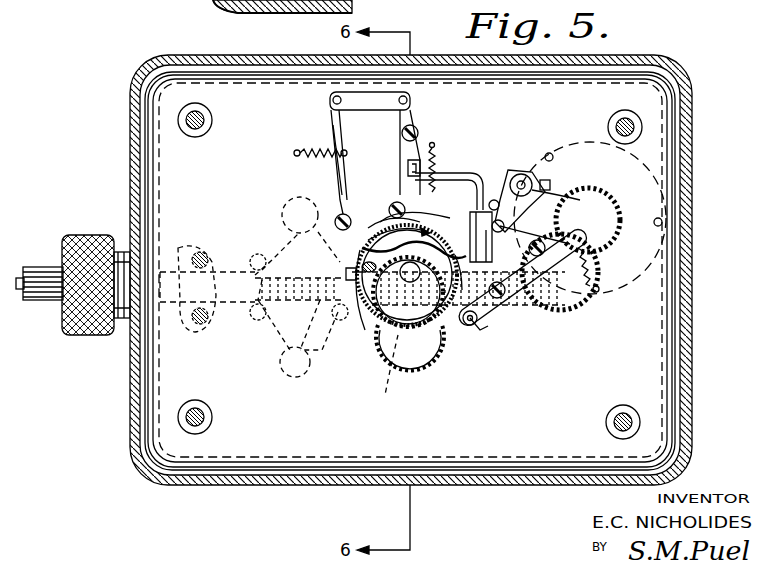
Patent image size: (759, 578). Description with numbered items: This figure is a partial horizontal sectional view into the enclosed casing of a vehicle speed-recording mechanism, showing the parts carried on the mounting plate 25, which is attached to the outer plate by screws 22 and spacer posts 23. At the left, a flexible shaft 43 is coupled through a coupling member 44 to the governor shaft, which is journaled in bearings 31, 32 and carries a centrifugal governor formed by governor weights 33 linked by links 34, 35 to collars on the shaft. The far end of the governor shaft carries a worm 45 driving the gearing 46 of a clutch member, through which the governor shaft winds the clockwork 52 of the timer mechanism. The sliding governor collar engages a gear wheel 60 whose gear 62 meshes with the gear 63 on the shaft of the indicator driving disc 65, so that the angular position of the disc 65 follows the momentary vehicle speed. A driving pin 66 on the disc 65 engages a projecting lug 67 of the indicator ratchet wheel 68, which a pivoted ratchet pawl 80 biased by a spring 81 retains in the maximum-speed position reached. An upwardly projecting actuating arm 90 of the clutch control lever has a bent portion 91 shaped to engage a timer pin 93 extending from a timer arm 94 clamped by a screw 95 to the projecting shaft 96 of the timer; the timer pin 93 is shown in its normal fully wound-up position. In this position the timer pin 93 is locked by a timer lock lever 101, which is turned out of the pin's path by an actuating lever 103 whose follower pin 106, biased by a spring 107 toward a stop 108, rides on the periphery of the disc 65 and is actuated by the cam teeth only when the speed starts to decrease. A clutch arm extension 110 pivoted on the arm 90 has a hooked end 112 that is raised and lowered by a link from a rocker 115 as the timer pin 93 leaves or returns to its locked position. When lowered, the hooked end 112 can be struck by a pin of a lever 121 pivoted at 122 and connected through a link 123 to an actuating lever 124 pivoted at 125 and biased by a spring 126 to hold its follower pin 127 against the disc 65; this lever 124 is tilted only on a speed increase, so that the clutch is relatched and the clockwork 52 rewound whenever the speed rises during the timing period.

The screws 22 is at (195, 132).
The spacer posts 23 is at (212, 120).
The mounting plate 25 is at (648, 358).
The bearing 31 is at (186, 316).
The bearing 32 is at (515, 306).
The governor weights 33 is at (288, 213).
The links 34 is at (258, 240).
The links 35 is at (327, 350).
The flexible shaft 43 is at (28, 268).
The coupling member 44 is at (72, 235).
The worm 45 is at (552, 326).
The gearing 46 is at (654, 264).
The clockwork 52 is at (694, 258).
The gear wheel 60 is at (440, 395).
The gear 62 is at (430, 395).
The gear 63 is at (430, 240).
The indicator driving disc 65 is at (364, 237).
The driving pin 66 is at (380, 330).
The projecting lug 67 is at (366, 264).
The indicator ratchet wheel 68 is at (381, 222).
The ratchet pawl 80 is at (395, 205).
The spring 81 is at (436, 150).
The actuating arm 90 is at (469, 240).
The bent portion 91 is at (502, 168).
The timer pin 93 is at (568, 198).
The timer arm 94 is at (550, 185).
The screw 95 is at (560, 188).
The projecting shaft 96 is at (524, 175).
The timer lock lever 101 is at (560, 234).
The actuating lever 103 is at (500, 326).
The follower pin 106 is at (465, 328).
The spring 107 is at (480, 330).
The stop 108 is at (472, 330).
The clutch arm extension 110 is at (458, 176).
The hooked end 112 is at (408, 162).
The rocker 115 is at (519, 172).
The lever 121 is at (411, 104).
The pivot 122 is at (420, 134).
The link 123 is at (375, 101).
The actuating lever 124 is at (338, 178).
The pivot 125 is at (335, 240).
The spring 126 is at (320, 139).
The follower pin 127 is at (382, 371).